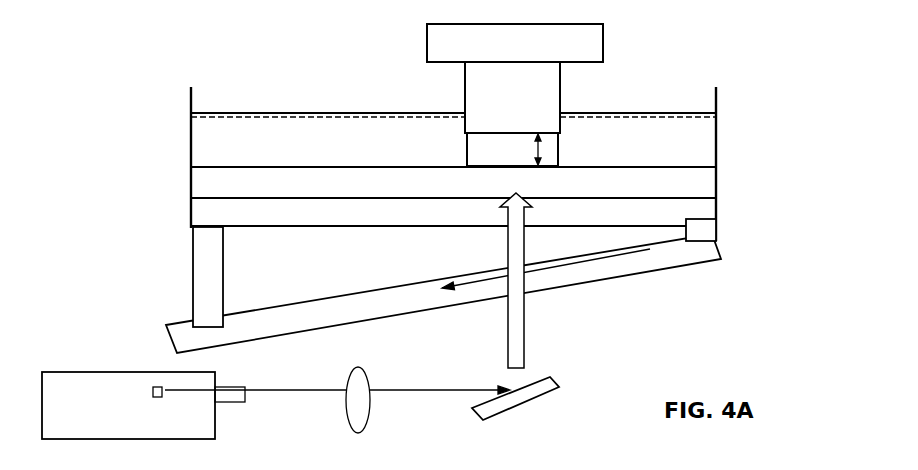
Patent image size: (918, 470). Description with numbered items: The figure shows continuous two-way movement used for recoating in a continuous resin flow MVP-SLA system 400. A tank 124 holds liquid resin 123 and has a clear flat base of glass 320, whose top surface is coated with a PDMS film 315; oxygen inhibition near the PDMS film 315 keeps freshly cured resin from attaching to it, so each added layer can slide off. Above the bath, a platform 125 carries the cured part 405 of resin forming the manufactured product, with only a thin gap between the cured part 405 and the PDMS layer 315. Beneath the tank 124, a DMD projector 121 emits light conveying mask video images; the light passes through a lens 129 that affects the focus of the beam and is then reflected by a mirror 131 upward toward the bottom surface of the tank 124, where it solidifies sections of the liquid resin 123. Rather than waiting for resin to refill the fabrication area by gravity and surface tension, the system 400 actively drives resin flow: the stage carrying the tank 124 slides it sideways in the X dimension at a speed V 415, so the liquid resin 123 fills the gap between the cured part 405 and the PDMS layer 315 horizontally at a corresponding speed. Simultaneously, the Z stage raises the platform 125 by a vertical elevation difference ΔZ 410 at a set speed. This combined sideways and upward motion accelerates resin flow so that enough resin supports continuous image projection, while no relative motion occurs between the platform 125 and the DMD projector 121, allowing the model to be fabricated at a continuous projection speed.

The continuous resin flow MVP-SLA system 400 is at (684, 56).
The tank 124 is at (190, 99).
The liquid resin 123 is at (190, 137).
The platform 125 is at (571, 25).
The cured part 405 is at (562, 70).
The vertical elevation difference ΔZ 410 is at (559, 148).
The PDMS film 315 is at (685, 178).
The glass 320 is at (303, 220).
The speed V 415 is at (556, 268).
The DMD projector 121 is at (102, 372).
The lens 129 is at (347, 417).
The mirror 131 is at (560, 387).